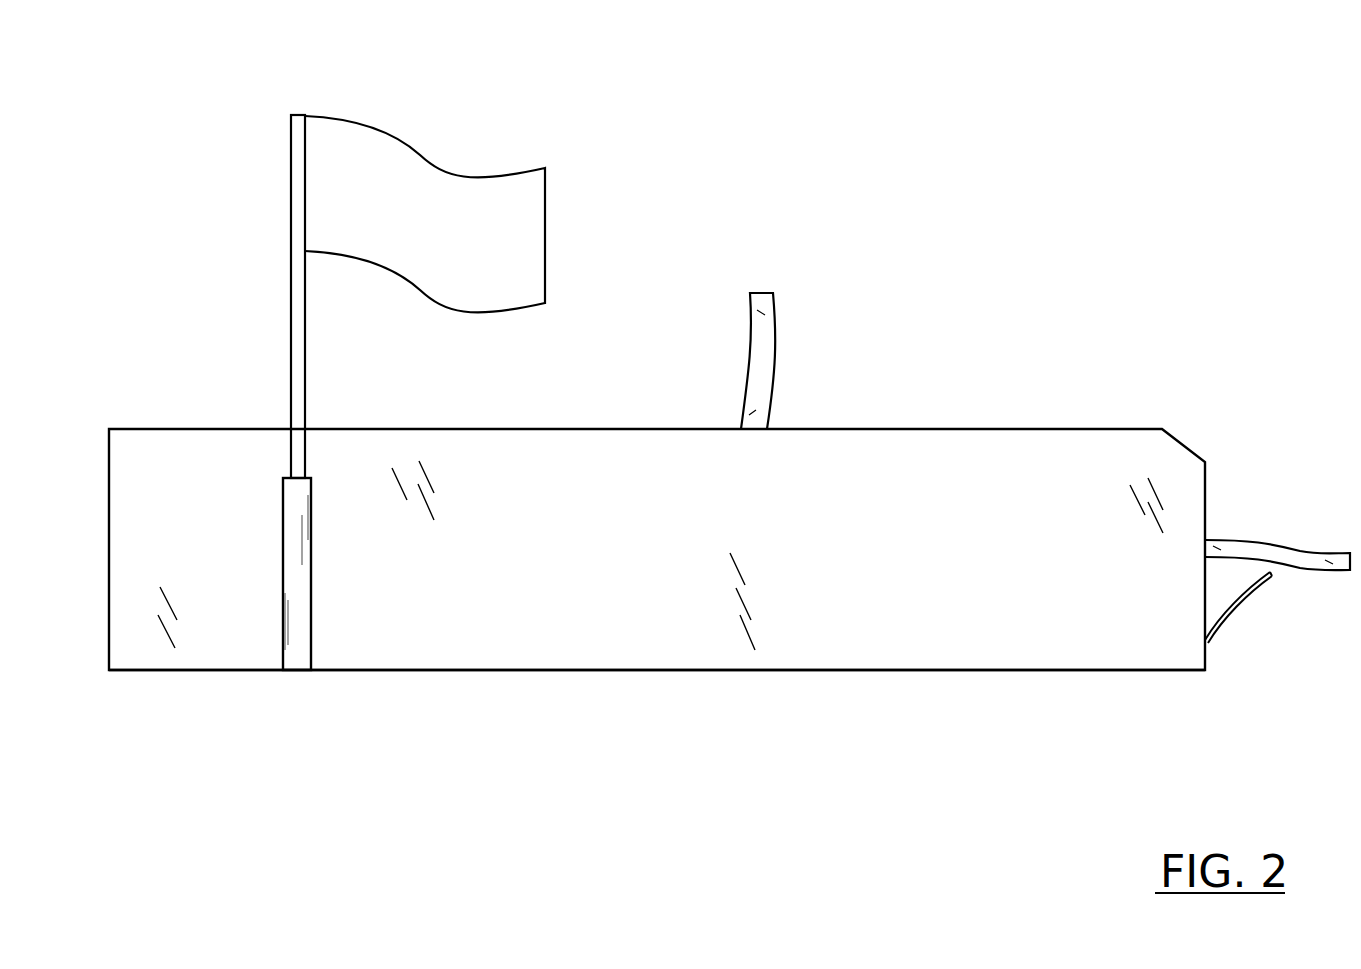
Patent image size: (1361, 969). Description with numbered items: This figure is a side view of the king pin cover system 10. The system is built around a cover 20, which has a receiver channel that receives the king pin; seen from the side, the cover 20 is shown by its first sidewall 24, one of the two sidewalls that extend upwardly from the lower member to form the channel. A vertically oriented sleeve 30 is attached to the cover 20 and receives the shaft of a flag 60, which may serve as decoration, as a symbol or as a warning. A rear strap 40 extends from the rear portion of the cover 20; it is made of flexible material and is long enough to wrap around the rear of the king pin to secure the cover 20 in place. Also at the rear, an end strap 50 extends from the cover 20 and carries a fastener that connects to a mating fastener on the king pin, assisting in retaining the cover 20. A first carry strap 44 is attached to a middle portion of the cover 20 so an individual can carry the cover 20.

The king pin cover system 10 is at (1131, 131).
The cover 20 is at (677, 670).
The first sidewall 24 is at (840, 645).
The sleeve 30 is at (296, 662).
The rear strap 40 is at (1266, 552).
The first carry strap 44 is at (765, 333).
The end strap 50 is at (1237, 600).
The flag 60 is at (528, 205).